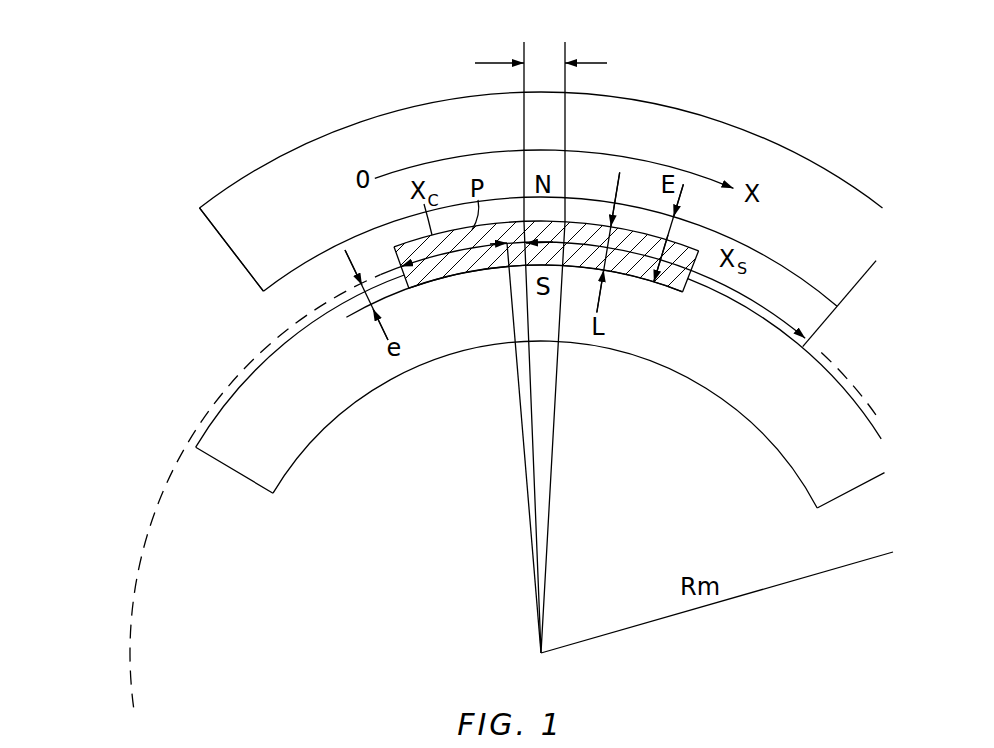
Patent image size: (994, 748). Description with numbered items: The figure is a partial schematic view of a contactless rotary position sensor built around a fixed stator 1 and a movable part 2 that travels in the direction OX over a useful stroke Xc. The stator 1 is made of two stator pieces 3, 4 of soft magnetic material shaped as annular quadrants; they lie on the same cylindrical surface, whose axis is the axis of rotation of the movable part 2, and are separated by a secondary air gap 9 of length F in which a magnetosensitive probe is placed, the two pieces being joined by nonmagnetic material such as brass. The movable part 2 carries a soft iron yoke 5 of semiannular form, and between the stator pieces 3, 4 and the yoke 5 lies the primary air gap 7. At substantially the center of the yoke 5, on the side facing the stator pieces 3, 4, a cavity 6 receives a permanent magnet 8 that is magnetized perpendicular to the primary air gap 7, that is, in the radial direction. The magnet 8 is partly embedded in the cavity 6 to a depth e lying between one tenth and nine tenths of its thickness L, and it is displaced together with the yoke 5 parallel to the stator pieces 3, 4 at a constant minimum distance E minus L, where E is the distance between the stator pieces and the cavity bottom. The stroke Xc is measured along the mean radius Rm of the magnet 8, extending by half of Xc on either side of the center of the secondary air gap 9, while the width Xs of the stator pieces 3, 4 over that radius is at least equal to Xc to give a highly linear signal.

The fixed stator 1 is at (511, 339).
The movable part 2 is at (472, 463).
The stator piece 3 is at (278, 170).
The stator piece 4 is at (700, 127).
The soft iron yoke 5 is at (297, 447).
The cavity 6 is at (420, 285).
The primary air gap 7 is at (275, 290).
The magnet 8 is at (475, 272).
The secondary air gap 9 is at (540, 113).